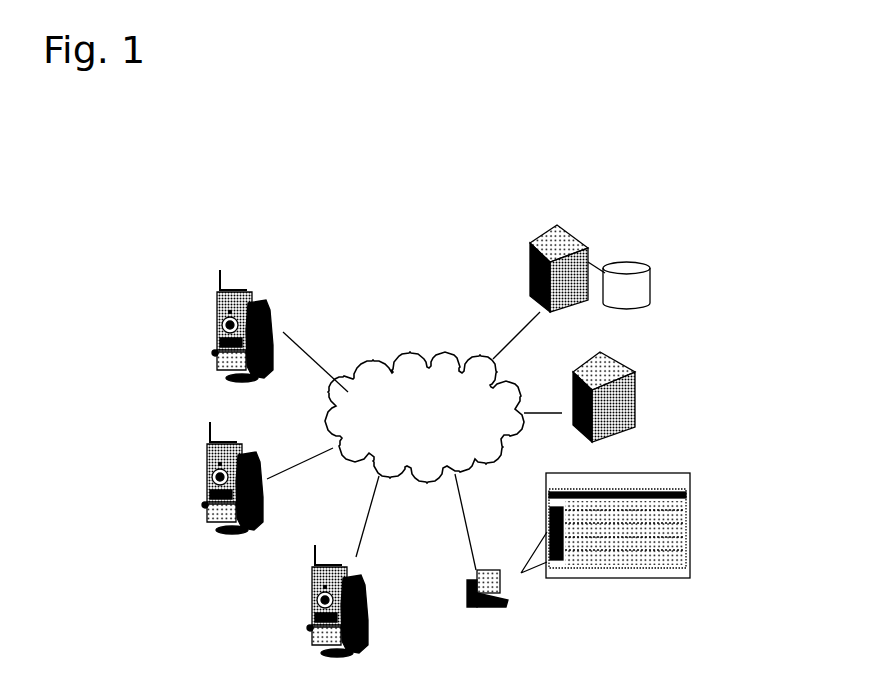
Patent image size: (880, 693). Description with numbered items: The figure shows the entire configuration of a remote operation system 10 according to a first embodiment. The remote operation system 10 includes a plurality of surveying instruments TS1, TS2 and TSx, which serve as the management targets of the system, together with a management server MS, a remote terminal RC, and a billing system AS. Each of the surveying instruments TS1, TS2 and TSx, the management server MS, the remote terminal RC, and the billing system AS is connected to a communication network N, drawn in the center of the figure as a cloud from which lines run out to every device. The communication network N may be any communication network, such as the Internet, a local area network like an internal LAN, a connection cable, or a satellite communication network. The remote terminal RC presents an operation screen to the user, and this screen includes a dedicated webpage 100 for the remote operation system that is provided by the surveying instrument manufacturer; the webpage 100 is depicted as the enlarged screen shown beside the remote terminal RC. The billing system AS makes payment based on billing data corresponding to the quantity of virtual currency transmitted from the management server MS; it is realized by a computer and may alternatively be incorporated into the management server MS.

The remote operation system 10 is at (737, 268).
The communication network N is at (403, 360).
The surveying instrument TS1 is at (212, 320).
The surveying instrument TS2 is at (202, 473).
The surveying instrument TSx is at (307, 606).
The management server MS is at (575, 236).
The billing system AS is at (635, 390).
The dedicated webpage 100 is at (690, 492).
The remote terminal RC is at (505, 604).